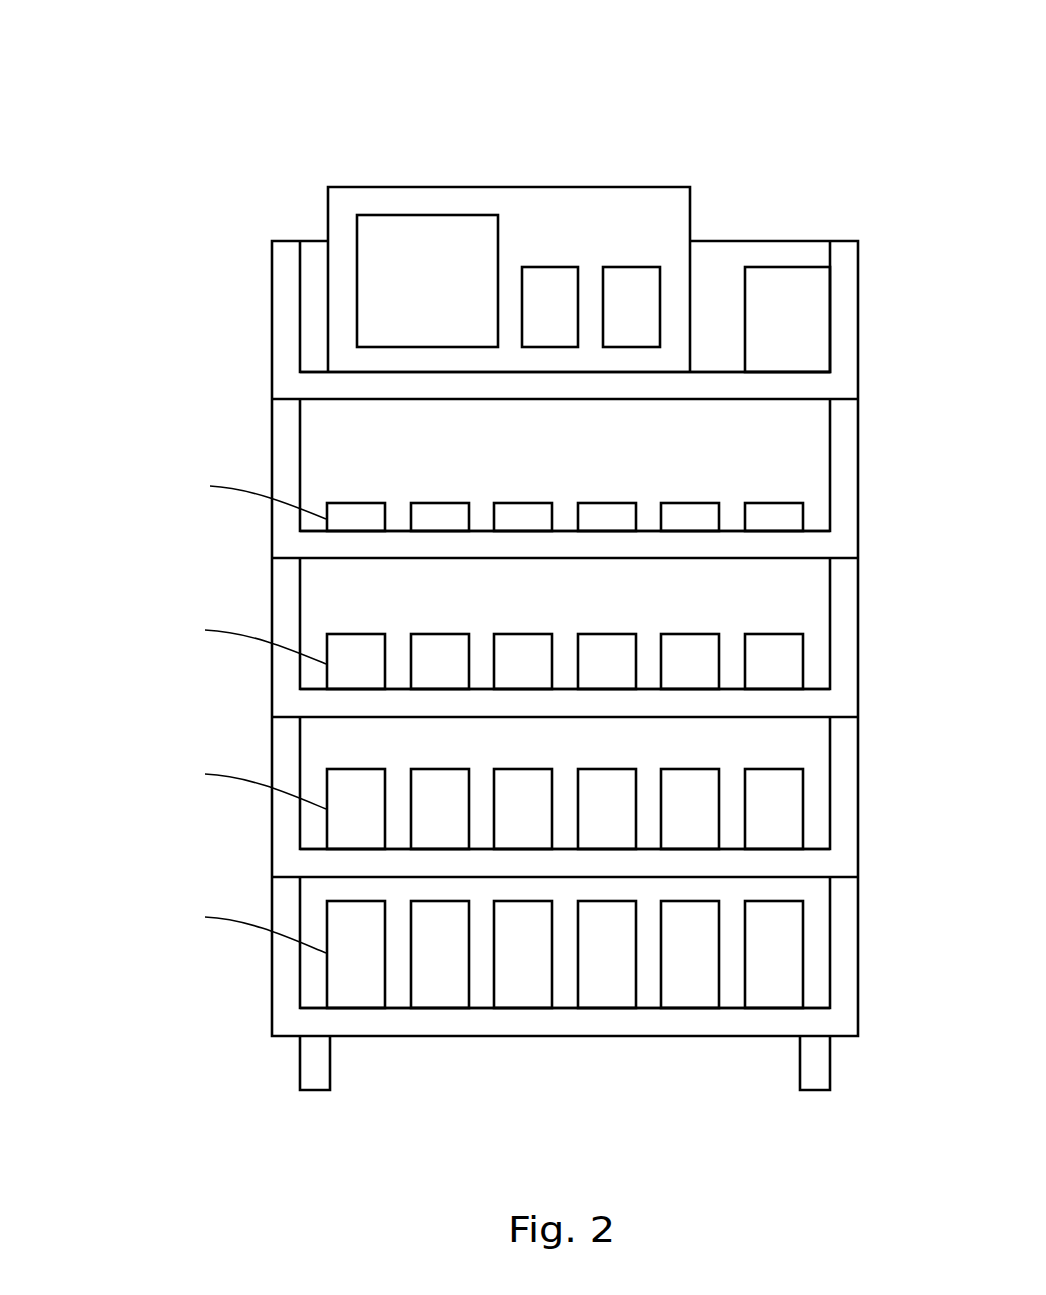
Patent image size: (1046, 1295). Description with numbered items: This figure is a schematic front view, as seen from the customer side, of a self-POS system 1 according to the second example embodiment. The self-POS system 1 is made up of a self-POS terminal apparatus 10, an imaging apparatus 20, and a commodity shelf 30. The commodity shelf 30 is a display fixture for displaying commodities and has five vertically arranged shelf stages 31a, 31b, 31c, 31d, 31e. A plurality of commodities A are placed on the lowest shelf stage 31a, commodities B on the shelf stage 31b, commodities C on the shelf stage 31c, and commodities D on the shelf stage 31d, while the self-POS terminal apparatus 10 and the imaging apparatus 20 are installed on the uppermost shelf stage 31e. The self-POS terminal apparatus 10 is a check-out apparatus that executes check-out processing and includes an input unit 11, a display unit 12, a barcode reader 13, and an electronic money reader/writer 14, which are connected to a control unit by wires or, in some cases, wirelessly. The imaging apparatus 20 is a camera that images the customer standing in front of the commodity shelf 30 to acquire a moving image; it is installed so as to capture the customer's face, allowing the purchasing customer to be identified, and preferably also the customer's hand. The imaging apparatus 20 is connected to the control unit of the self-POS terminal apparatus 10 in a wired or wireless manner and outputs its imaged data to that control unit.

The self-POS system 1 is at (786, 82).
The self-POS terminal apparatus 10 is at (470, 187).
The input unit 11 is at (392, 215).
The display unit 12 is at (427, 281).
The barcode reader 13 is at (548, 267).
The electronic money reader/writer 14 is at (642, 267).
The imaging apparatus 20 is at (787, 267).
The commodity shelf 30 is at (870, 270).
The shelf stage 31a is at (860, 1004).
The shelf stage 31b is at (860, 838).
The shelf stage 31c is at (860, 686).
The shelf stage 31d is at (860, 528).
The shelf stage 31e is at (860, 369).